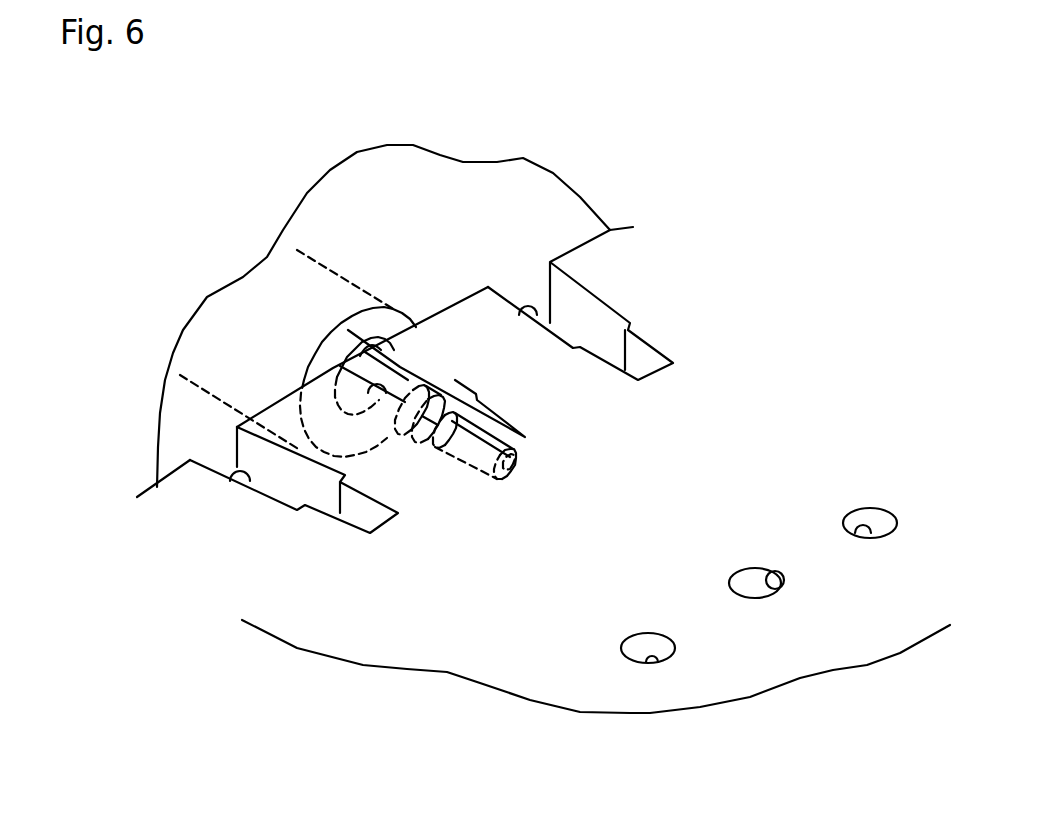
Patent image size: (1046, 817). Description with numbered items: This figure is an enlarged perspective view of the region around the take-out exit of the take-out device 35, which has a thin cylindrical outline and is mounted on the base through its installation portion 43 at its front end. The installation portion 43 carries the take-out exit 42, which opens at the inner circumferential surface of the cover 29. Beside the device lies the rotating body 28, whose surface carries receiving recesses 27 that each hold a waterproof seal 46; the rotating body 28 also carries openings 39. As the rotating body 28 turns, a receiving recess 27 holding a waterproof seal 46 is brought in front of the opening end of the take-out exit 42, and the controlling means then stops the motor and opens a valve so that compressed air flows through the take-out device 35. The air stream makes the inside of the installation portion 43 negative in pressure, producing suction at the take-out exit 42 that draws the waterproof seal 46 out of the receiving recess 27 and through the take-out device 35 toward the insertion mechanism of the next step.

The receiving recess 27 is at (228, 474).
The rotating body 28 is at (417, 612).
The cover 29 is at (190, 420).
The take-out device 35 is at (207, 252).
The mounting hole 39 is at (657, 661).
The take-out exit 42 is at (380, 338).
The installation portion 43 is at (320, 295).
The waterproof seal 46 is at (397, 380).